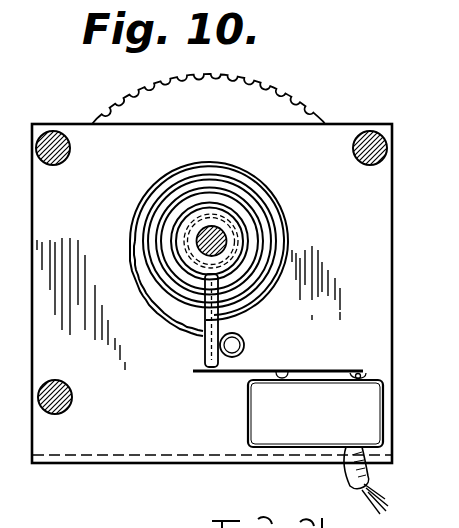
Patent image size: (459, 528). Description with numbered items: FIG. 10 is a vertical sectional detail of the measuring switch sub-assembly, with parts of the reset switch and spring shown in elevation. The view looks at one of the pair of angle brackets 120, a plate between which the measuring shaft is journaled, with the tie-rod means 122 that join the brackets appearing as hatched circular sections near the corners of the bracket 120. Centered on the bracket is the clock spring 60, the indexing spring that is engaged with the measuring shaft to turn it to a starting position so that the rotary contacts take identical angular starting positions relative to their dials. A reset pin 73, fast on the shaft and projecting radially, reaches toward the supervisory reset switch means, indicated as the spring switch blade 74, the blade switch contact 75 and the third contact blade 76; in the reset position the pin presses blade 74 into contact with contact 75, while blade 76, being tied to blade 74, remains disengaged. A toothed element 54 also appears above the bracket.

The toothed wheel (gear) 54 is at (279, 86).
The clock spring 60 is at (287, 212).
The reset pin 73 is at (205, 345).
The spring switch blade 74 is at (318, 447).
The blade switch contact 75 is at (318, 447).
The third contact blade 76 is at (318, 447).
The angle bracket 120 is at (100, 204).
The tie-rod means 122 is at (65, 105).